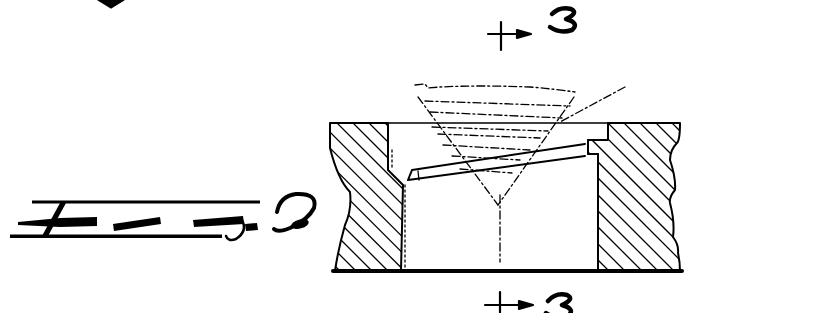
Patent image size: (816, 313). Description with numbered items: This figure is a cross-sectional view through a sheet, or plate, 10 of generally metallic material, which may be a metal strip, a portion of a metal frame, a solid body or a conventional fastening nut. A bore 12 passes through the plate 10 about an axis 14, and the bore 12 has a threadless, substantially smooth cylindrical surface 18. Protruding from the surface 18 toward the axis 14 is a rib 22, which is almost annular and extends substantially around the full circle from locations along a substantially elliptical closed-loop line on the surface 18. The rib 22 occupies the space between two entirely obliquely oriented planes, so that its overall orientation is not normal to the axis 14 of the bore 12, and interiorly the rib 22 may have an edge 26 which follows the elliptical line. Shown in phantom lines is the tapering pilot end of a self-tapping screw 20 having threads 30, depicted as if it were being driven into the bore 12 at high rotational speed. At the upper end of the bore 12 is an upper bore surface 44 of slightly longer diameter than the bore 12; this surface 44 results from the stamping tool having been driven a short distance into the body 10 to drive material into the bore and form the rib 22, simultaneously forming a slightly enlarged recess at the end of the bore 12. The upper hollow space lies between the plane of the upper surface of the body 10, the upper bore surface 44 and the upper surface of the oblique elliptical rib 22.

The sheet 10 is at (330, 140).
The bore 12 is at (417, 276).
The axis 14 is at (500, 247).
The cylindrical surface 18 is at (597, 258).
The self-tapping screw 20 is at (610, 98).
The rib 22 is at (596, 126).
The edge 26 is at (563, 160).
The threads 30 is at (415, 86).
The upper bore surface 44 is at (393, 138).